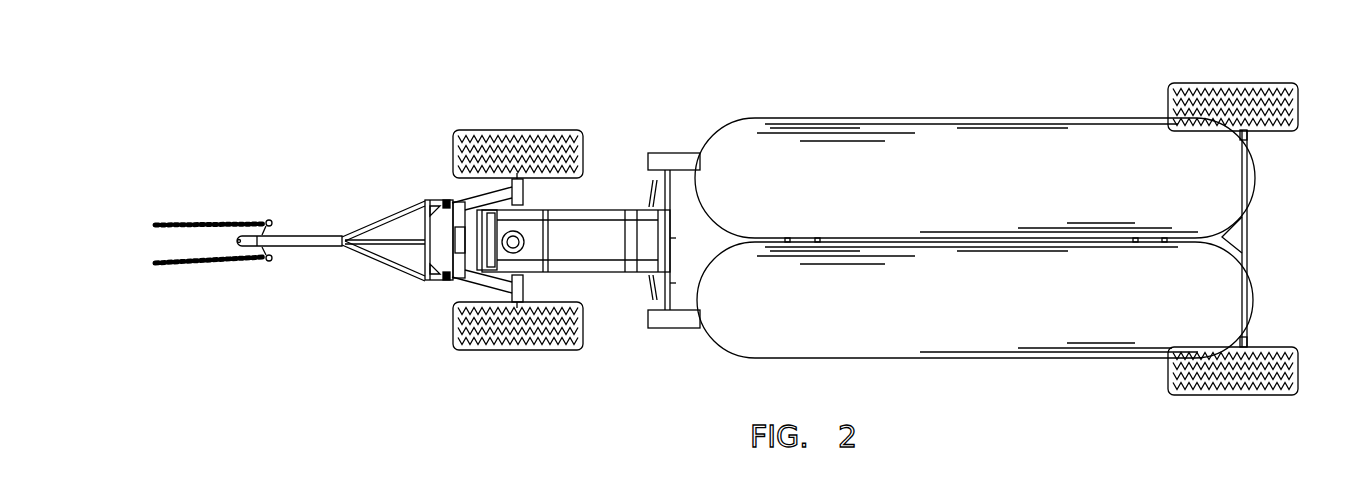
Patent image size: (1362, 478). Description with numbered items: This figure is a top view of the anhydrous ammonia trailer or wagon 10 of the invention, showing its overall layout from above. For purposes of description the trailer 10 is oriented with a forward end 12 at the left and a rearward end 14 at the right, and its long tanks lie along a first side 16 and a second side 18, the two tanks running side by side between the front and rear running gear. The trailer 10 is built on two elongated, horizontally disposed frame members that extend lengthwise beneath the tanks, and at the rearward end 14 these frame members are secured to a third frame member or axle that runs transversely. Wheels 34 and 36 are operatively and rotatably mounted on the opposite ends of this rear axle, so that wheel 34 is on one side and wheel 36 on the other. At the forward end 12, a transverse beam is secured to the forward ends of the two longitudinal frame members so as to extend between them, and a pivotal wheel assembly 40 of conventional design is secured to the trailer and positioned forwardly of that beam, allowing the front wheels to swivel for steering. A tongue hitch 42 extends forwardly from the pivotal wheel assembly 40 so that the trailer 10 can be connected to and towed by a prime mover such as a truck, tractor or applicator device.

The trailer 10 is at (623, 145).
The forward end 12 is at (392, 185).
The rearward end 14 is at (1278, 232).
The first side 16 is at (1028, 370).
The second side 18 is at (1015, 103).
The wheel 34 is at (1267, 397).
The wheel 36 is at (1255, 83).
The pivotal wheel assembly 40 is at (517, 352).
The tongue hitch 42 is at (312, 247).